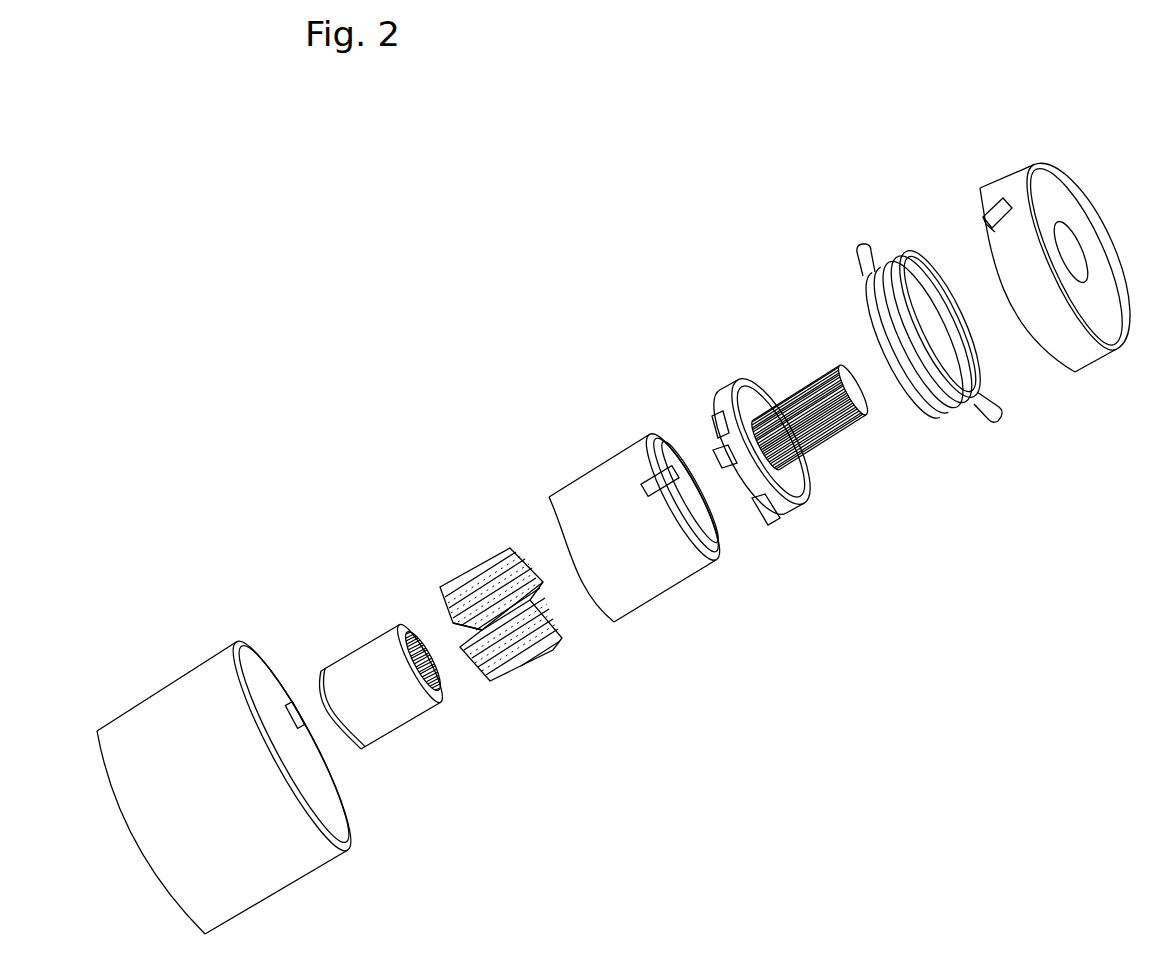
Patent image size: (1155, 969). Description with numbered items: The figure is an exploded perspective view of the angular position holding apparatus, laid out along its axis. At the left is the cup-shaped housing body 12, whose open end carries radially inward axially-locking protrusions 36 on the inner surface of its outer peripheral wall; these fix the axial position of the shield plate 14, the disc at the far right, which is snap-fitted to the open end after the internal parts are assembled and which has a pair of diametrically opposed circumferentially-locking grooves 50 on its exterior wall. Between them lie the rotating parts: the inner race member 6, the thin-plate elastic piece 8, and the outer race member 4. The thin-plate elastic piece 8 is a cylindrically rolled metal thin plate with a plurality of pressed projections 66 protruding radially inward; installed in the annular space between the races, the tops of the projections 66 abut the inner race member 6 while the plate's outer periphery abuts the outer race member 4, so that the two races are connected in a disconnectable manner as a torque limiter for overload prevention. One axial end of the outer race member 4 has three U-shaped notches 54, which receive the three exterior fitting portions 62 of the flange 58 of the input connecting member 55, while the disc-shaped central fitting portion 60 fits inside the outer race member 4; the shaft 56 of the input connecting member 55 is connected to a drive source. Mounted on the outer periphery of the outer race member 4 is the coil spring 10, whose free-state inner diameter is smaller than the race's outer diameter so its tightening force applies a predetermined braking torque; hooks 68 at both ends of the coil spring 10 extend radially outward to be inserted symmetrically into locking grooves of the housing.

The outer race member 4 is at (583, 475).
The inner race member 6 is at (368, 643).
The thin-plate elastic piece 8 is at (495, 586).
The coil spring 10 is at (852, 291).
The housing body 12 is at (168, 683).
The shield plate 14 is at (990, 183).
The axially-locking protrusions 36 is at (283, 712).
The circumferentially-locking grooves 50 is at (986, 214).
The notches 54 is at (645, 473).
The input connecting member 55 is at (857, 448).
The shaft 56 is at (815, 455).
The flange 58 is at (730, 380).
The central fitting portion 60 is at (741, 503).
The exterior fitting portions 62 is at (707, 452).
The projections 66 is at (532, 563).
The hooks 68 is at (869, 252).